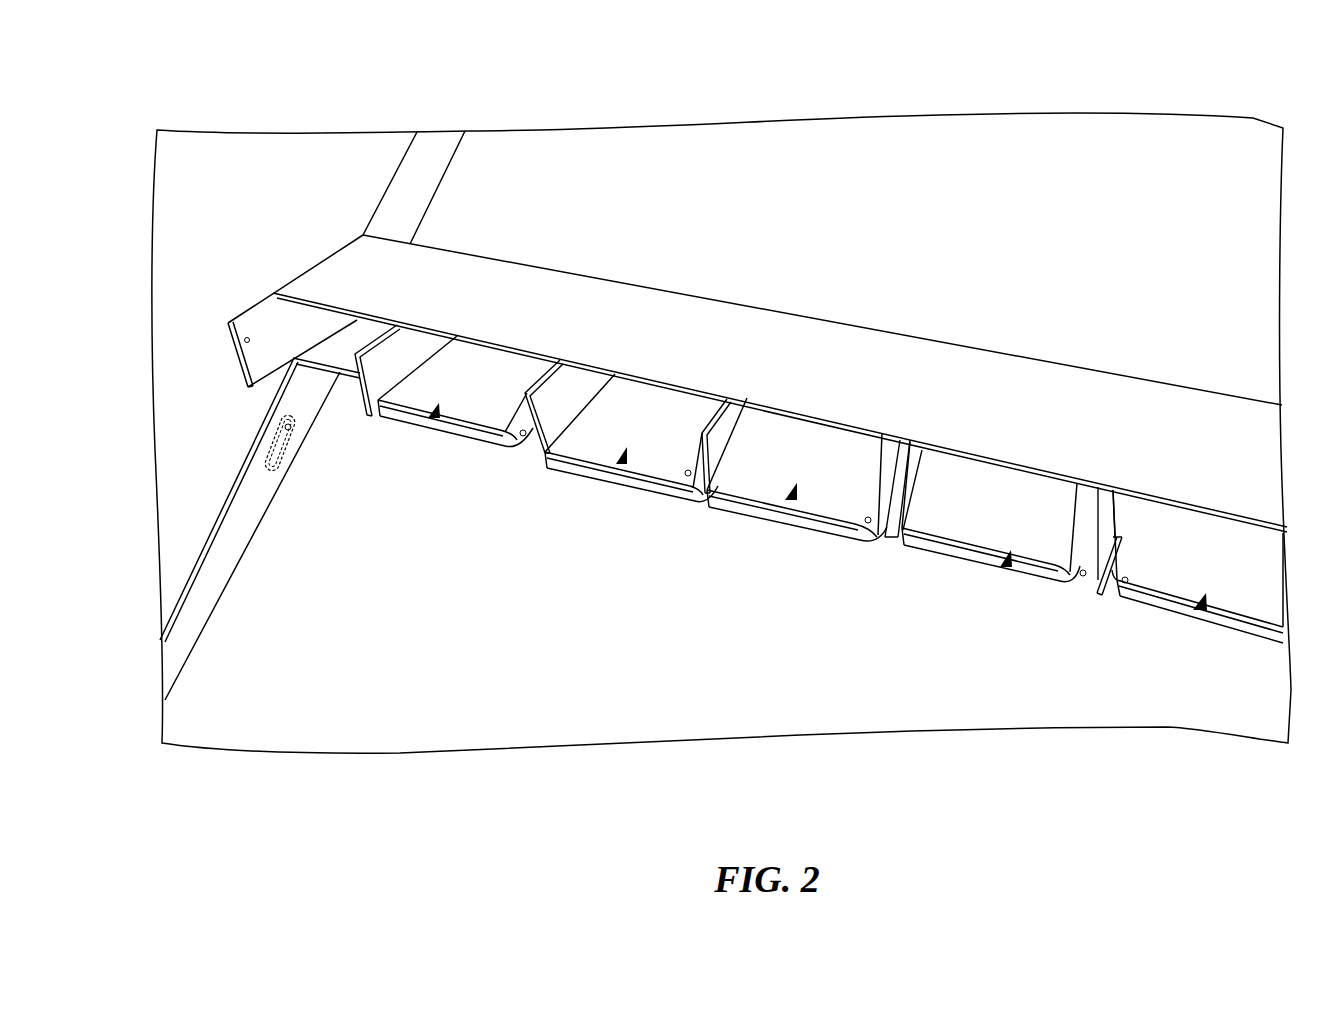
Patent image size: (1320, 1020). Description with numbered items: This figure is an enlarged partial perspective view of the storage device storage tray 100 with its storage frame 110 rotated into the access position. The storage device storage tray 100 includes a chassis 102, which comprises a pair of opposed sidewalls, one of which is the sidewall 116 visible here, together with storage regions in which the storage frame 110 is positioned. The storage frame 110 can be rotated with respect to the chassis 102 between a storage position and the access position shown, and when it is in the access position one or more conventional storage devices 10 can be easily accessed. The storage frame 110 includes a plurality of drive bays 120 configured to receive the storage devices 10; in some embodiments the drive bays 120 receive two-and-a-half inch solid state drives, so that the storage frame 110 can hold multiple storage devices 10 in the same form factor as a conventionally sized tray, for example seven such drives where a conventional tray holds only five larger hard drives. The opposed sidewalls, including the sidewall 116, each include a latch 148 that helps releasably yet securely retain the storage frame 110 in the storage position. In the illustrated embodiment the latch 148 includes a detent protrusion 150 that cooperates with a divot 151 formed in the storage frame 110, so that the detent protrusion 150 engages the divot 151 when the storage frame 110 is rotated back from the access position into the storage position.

The storage device storage tray 100 is at (944, 128).
The chassis 102 is at (400, 146).
The storage frame 110 is at (1092, 424).
The divot 151 is at (237, 333).
The detent protrusion 150 is at (287, 422).
The latch 148 is at (267, 450).
The sidewall 116 is at (187, 607).
The storage device 10 is at (660, 400).
The drive bay 120 is at (433, 417).